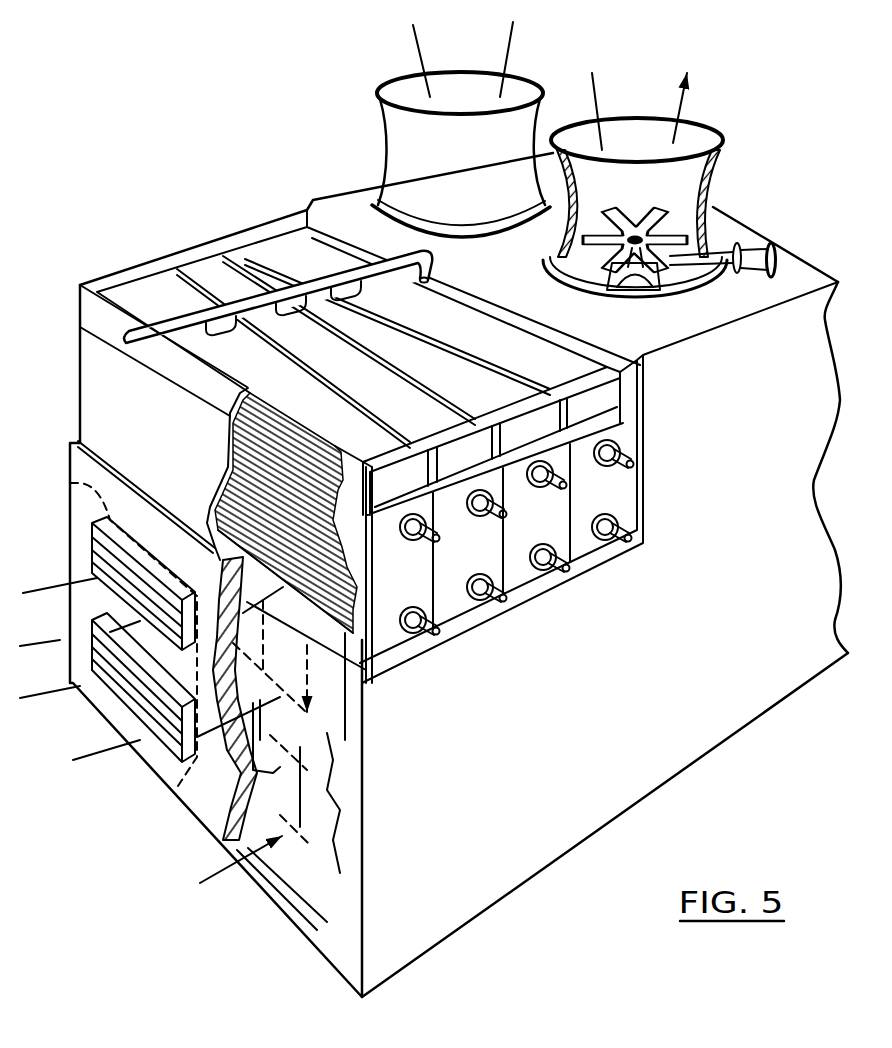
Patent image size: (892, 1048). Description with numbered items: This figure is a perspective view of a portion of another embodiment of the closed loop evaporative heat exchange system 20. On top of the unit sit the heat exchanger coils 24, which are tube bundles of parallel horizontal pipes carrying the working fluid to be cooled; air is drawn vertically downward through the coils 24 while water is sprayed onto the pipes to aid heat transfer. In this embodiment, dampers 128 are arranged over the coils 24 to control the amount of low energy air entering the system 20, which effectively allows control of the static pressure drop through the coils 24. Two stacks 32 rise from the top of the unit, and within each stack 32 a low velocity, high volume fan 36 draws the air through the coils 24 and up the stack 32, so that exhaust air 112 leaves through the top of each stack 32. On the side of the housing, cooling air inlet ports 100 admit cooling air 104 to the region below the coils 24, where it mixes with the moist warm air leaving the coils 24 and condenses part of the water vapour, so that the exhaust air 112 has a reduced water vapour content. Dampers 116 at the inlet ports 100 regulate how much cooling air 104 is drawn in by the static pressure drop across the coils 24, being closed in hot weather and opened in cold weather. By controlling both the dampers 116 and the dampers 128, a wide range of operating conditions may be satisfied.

The closed loop evaporative heat exchange system 20 is at (226, 139).
The heat exchanger coils 24 is at (400, 592).
The stack 32 is at (388, 165).
The fan 36 is at (630, 224).
The cooling air inlet ports 100 is at (70, 483).
The cooling air 104 is at (57, 645).
The exhaust air 112 is at (500, 64).
The dampers 116 is at (92, 547).
The dampers 128 is at (305, 252).